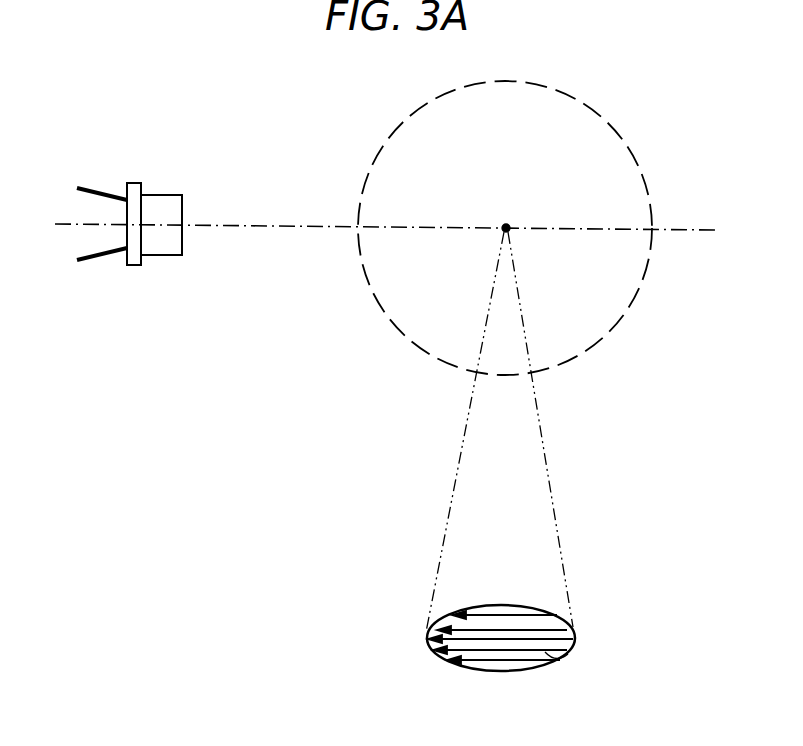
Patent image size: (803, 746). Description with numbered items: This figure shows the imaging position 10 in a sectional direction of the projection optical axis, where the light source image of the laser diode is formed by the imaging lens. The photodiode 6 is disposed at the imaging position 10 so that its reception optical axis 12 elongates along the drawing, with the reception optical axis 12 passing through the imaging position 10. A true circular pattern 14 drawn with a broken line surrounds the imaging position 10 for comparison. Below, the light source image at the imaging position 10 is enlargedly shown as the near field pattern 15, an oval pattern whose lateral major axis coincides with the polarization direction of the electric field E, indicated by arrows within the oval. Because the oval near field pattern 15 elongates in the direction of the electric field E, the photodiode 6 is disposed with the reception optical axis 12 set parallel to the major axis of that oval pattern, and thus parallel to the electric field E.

The photodiode 6 is at (162, 200).
The imaging position 10 is at (506, 222).
The reception optical axis 12 is at (281, 222).
The true circular pattern 14 is at (392, 320).
The near field pattern 15 is at (442, 657).
The electric field E is at (563, 655).